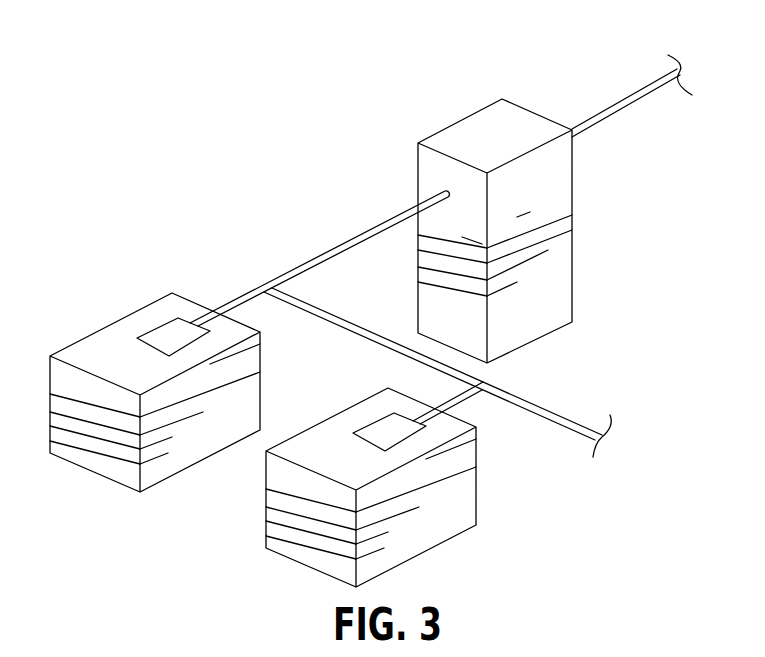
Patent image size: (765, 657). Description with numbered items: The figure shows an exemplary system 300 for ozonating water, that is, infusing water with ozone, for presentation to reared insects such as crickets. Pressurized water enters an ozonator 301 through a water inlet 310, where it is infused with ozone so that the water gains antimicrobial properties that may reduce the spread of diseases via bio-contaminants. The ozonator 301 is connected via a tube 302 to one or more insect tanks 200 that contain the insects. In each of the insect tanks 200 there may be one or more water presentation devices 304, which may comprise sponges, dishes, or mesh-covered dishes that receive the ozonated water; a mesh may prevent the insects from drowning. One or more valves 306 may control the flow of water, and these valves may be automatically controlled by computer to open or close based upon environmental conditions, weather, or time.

The insect tank 200 is at (267, 548).
The system for ozonating water 300 is at (180, 129).
The ozonator 301 is at (455, 120).
The tube 302 is at (347, 240).
The water presentation device 304 is at (148, 330).
The valve 306 is at (265, 285).
The water inlet 310 is at (620, 100).